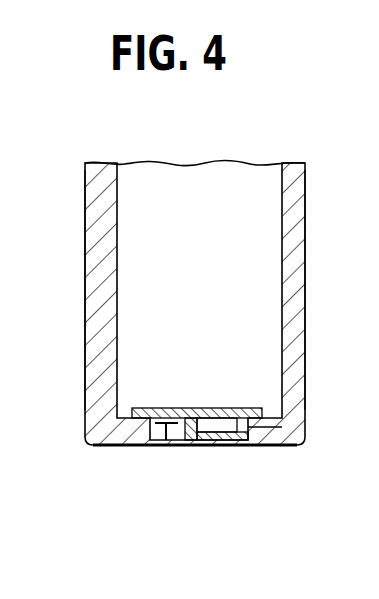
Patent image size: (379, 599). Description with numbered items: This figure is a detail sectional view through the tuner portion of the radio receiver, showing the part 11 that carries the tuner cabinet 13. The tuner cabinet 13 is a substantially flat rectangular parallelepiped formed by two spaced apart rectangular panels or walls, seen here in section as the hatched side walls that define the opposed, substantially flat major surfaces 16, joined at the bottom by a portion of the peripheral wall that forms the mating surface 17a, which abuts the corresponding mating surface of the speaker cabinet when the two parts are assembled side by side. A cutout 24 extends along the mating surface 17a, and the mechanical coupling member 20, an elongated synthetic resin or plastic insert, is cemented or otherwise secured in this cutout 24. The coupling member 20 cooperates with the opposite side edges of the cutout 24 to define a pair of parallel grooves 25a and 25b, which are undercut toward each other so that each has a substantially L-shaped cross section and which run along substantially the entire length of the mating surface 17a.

The part 11 is at (232, 153).
The tuner cabinet 13 is at (79, 235).
The major surfaces 16 is at (86, 312).
The mating surface 17a is at (133, 444).
The cutout 24 is at (157, 445).
The mechanical coupling member 20 is at (218, 452).
The groove 25b is at (173, 440).
The groove 25a is at (272, 428).